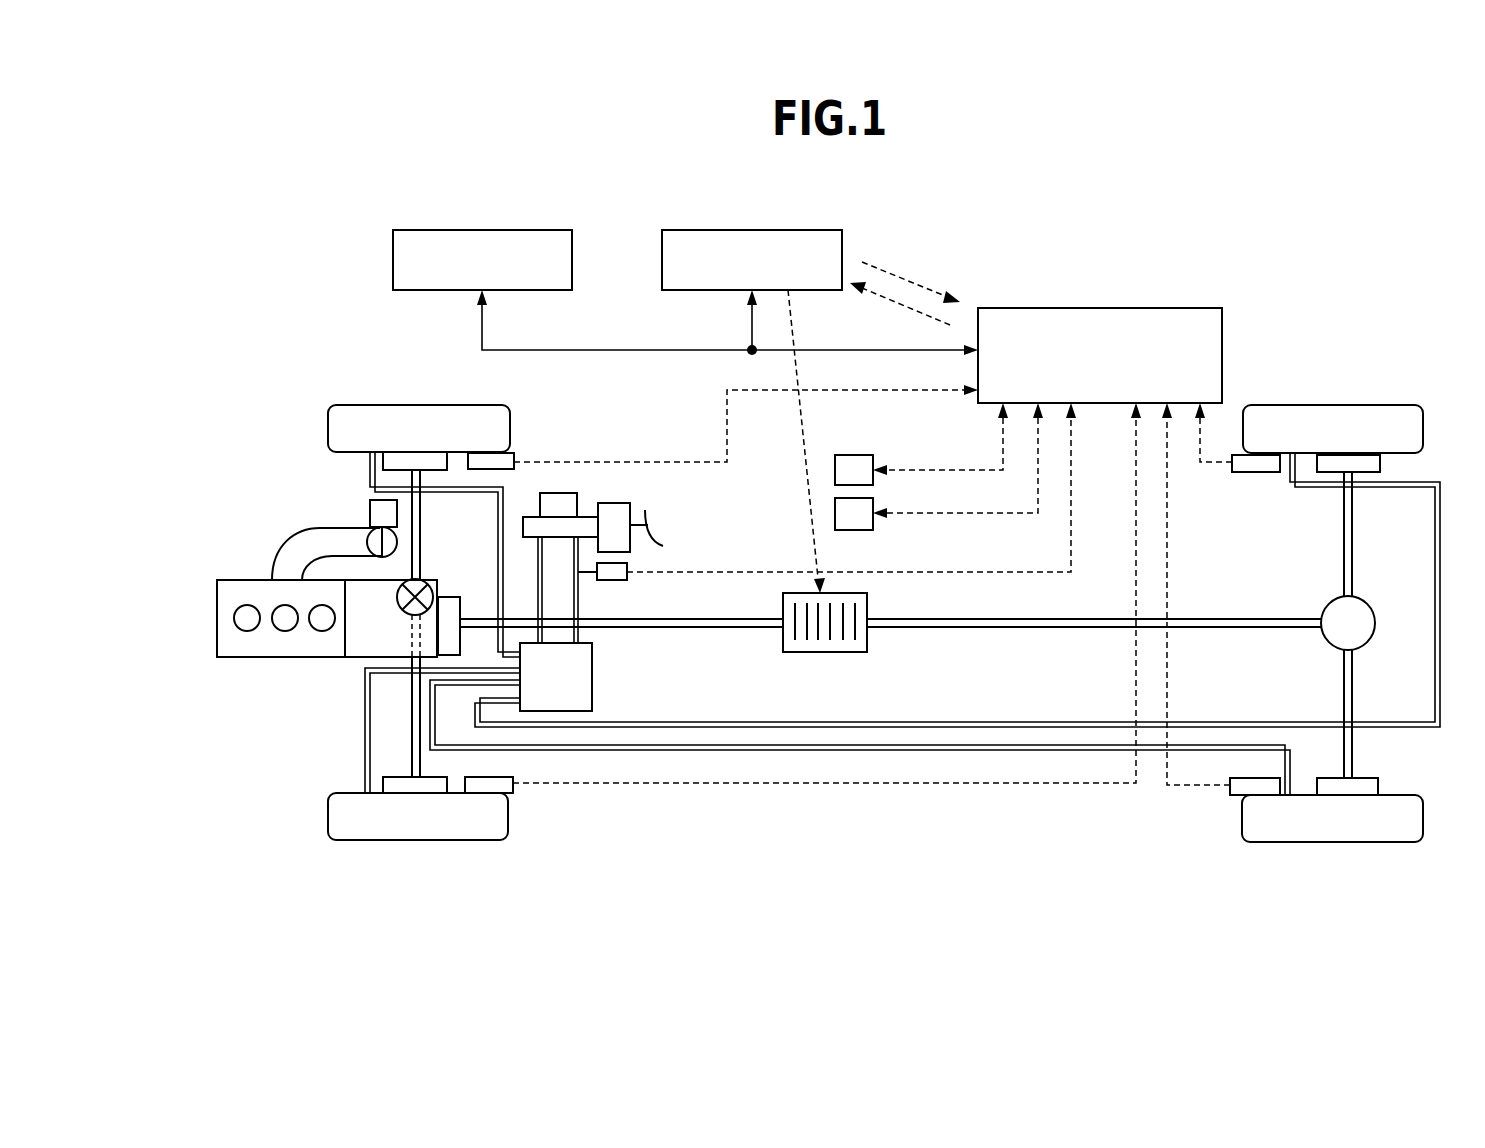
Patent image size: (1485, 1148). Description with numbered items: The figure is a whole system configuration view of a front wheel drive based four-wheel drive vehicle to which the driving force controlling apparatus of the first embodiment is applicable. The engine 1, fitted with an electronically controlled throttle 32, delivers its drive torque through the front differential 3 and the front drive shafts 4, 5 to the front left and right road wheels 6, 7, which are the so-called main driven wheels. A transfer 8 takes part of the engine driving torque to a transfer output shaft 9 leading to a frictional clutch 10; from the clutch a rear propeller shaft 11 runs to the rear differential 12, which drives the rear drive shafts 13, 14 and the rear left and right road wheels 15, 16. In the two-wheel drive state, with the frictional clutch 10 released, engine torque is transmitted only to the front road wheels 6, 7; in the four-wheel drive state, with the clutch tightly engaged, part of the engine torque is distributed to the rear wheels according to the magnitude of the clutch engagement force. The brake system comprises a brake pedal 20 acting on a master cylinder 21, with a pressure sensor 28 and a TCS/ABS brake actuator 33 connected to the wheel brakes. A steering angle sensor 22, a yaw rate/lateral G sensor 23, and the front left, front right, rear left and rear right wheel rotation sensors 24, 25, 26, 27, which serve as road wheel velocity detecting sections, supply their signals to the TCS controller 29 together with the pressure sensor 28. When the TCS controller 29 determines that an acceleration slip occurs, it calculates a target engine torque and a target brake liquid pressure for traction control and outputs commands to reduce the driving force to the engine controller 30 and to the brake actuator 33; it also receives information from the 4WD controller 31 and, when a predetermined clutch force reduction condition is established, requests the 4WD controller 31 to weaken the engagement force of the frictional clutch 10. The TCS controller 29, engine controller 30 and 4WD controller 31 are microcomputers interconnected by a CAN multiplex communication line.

The engine 1 is at (232, 580).
The front differential 3 is at (433, 580).
The front drive shaft 4 is at (412, 726).
The front drive shaft 5 is at (422, 530).
The front left road wheel 6 is at (415, 840).
The front right road wheel 7 is at (418, 405).
The transfer 8 is at (452, 597).
The transfer output shaft 9 is at (725, 627).
The frictional clutch 10 is at (825, 652).
The rear propeller shaft 11 is at (1003, 627).
The rear differential 12 is at (1365, 600).
The rear drive shaft 13 is at (1352, 688).
The rear drive shaft 14 is at (1352, 525).
The rear left road wheel 15 is at (1350, 842).
The rear right road wheel 16 is at (1337, 405).
The brake pedal 20 is at (663, 540).
The master cylinder 21 is at (590, 517).
The steering angle sensor 22 is at (853, 455).
The yaw rate/lateral G sensor 23 is at (853, 530).
The front left wheel rotation sensor 24 is at (500, 777).
The front right road wheel rotation sensor 25 is at (515, 470).
The rear left wheel rotation sensor 26 is at (1230, 795).
The rear right wheel rotation sensor 27 is at (1253, 472).
The pressure sensor 28 is at (615, 580).
The TCS controller 29 is at (1140, 308).
The engine controller 30 is at (518, 230).
The 4WD controller 31 is at (790, 230).
The electronically controlled throttle 32 is at (370, 510).
The TCS/ABS brake actuator 33 is at (592, 680).